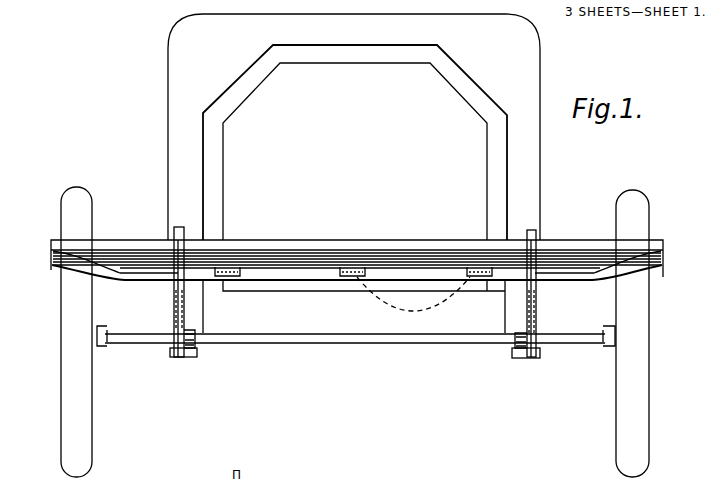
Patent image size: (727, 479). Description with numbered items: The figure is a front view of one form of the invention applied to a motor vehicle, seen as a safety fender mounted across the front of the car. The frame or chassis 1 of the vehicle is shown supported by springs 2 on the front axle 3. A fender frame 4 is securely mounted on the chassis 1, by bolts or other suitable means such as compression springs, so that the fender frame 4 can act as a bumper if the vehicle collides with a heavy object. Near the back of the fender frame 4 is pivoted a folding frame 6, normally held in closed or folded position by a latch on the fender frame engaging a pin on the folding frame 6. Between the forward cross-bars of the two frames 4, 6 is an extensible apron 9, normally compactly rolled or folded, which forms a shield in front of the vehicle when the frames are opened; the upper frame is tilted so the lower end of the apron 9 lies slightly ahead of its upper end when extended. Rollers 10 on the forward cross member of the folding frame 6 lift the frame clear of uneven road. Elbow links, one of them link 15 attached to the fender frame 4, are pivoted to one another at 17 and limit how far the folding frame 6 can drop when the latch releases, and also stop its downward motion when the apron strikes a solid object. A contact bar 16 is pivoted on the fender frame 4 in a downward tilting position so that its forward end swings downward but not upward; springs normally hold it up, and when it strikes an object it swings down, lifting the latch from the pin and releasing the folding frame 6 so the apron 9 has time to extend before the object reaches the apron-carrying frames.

The frame or chassis 1 is at (184, 137).
The springs 2 is at (198, 328).
The front axle 3 is at (351, 338).
The fender frame 4 is at (246, 247).
The folding frame 6 is at (168, 267).
The extensible apron 9 is at (283, 258).
The rollers 10 is at (413, 299).
The elbow link 15 is at (173, 292).
The contact bar 16 is at (323, 273).
The pivot of elbow links 17 is at (178, 300).